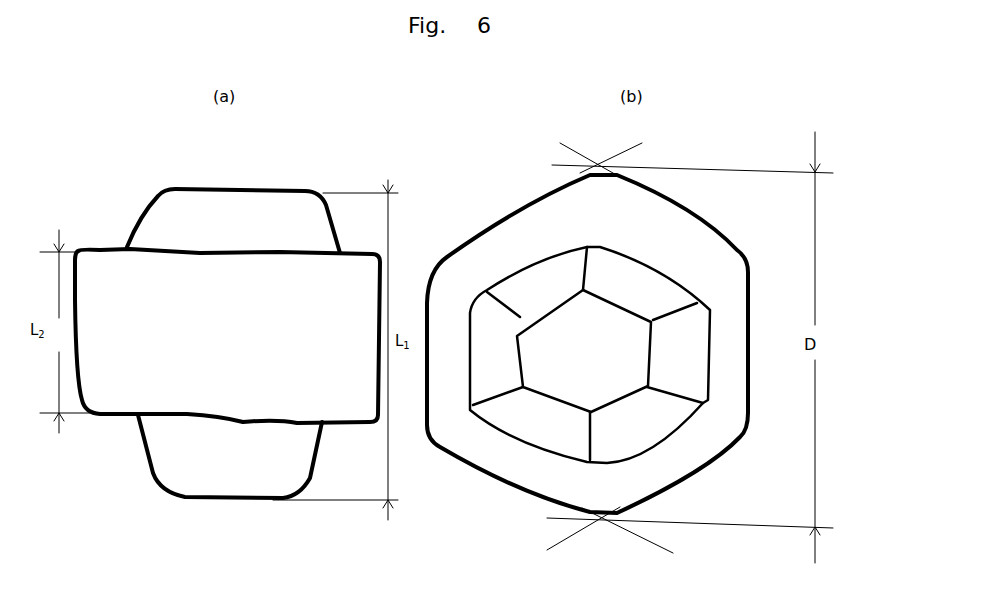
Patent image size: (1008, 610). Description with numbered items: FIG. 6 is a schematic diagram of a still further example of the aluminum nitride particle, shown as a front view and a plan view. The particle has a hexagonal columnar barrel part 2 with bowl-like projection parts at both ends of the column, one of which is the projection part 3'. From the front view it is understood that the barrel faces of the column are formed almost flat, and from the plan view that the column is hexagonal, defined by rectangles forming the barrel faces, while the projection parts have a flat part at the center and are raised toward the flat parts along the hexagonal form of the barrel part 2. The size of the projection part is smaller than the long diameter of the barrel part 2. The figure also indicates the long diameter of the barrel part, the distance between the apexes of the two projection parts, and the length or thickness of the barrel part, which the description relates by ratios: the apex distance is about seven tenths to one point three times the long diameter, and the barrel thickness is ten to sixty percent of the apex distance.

The hexagonal columnar barrel part 2 is at (210, 362).
The projection part 3' is at (244, 500).